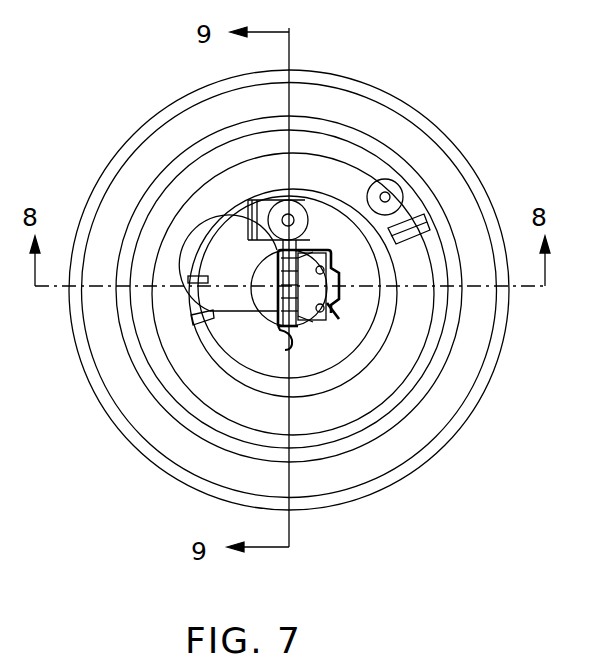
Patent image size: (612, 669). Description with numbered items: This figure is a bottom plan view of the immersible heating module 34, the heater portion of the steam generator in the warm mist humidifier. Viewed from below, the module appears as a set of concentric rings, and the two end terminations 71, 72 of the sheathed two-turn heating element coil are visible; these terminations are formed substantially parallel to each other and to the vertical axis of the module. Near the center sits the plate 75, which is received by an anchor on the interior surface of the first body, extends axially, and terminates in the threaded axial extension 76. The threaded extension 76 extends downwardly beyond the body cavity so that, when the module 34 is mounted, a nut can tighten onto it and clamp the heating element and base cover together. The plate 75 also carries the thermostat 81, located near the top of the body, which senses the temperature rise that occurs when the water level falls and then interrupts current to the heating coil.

The heating module 34 is at (396, 527).
The end termination 71 is at (293, 200).
The end termination 72 is at (385, 188).
The plate 75 is at (217, 312).
The threaded axial extension 76 is at (276, 288).
The thermostat 81 is at (327, 350).